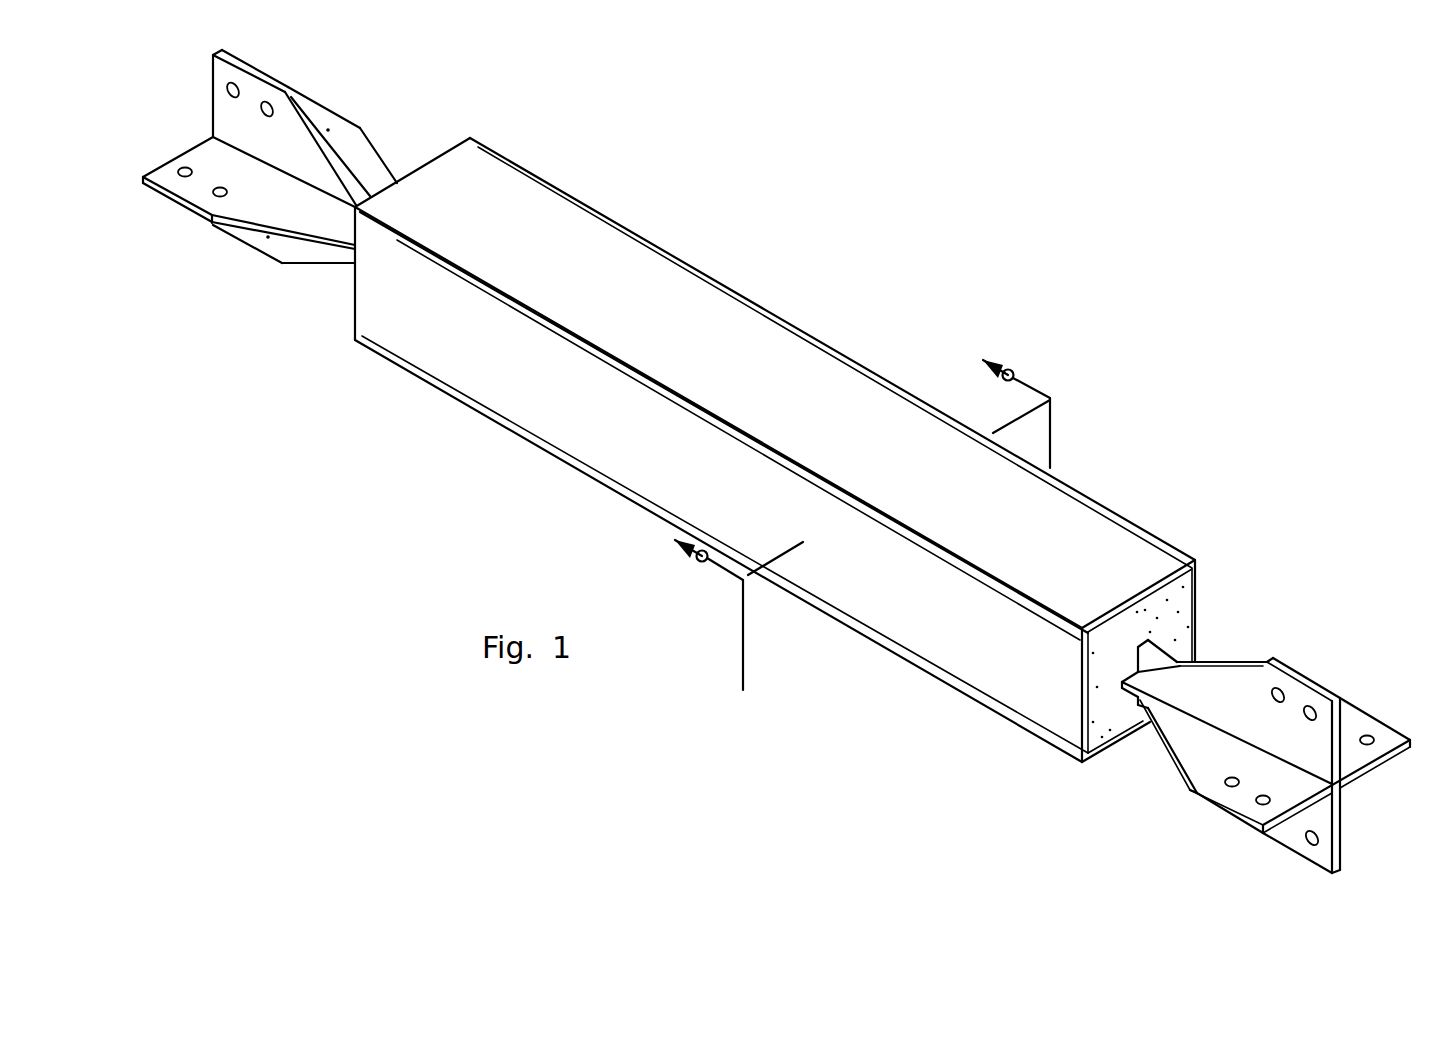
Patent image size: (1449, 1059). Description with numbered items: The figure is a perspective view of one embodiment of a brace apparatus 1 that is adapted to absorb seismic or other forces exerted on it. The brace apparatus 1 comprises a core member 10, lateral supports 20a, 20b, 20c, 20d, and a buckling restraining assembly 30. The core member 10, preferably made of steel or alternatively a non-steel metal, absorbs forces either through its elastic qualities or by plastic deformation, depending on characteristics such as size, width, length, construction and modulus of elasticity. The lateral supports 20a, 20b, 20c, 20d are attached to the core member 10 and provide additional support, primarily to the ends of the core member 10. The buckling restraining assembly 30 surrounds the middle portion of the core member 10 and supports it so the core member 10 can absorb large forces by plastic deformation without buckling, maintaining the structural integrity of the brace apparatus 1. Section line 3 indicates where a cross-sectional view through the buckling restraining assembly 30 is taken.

The brace apparatus 1 is at (922, 240).
The core member 10 is at (222, 107).
The lateral support 20a is at (347, 128).
The lateral support 20b is at (1363, 720).
The lateral support 20c is at (193, 193).
The lateral support 20d is at (1200, 768).
The buckling restraining assembly 30 is at (772, 310).
The section line 3- 3 is at (873, 525).